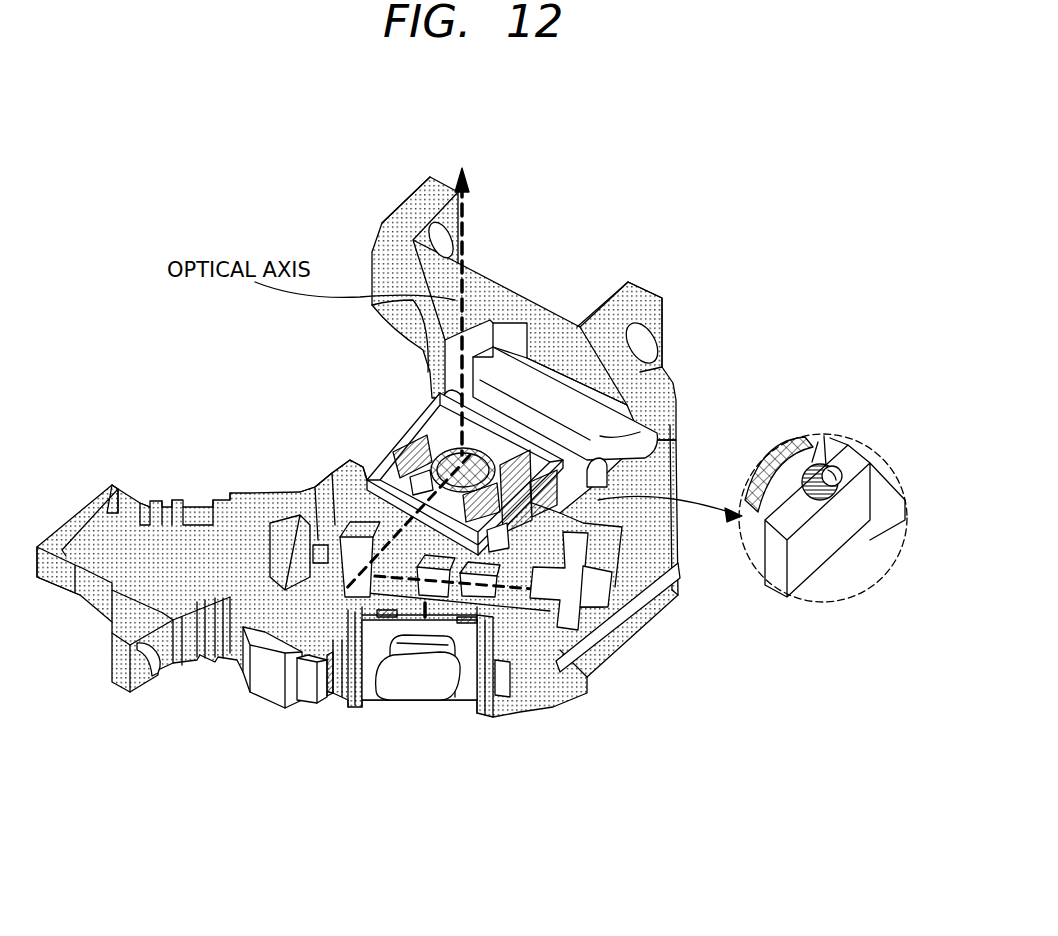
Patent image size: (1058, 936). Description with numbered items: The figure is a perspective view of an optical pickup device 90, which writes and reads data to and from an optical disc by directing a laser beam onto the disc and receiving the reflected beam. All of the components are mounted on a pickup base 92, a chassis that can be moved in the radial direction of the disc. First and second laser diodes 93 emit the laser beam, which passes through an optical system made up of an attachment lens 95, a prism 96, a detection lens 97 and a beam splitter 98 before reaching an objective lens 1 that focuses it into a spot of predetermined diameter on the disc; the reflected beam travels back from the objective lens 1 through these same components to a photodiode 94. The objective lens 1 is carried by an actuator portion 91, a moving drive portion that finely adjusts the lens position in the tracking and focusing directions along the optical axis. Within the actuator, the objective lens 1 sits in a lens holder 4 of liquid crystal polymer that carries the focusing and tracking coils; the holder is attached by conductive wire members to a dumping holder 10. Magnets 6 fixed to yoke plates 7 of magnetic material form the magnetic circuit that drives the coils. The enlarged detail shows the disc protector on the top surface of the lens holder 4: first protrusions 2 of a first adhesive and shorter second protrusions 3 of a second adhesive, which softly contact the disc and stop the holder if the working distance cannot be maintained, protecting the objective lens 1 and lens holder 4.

The objective lens 1 is at (415, 412).
The first protrusions 2 is at (823, 500).
The second protrusions 3 is at (835, 440).
The lens holder 4 is at (400, 450).
The magnets 6 is at (418, 418).
The yoke plates 7 is at (390, 470).
The dumping holder 10 is at (633, 438).
The optical pickup device 90 is at (588, 696).
The actuator portion 91 is at (636, 404).
The pickup base 92 is at (680, 276).
The laser diodes 93 is at (563, 630).
The photodiode 94 is at (267, 693).
The attachment lens 95 is at (570, 600).
The prism 96 is at (323, 500).
The detection lens 97 is at (253, 573).
The beam splitter 98 is at (290, 540).